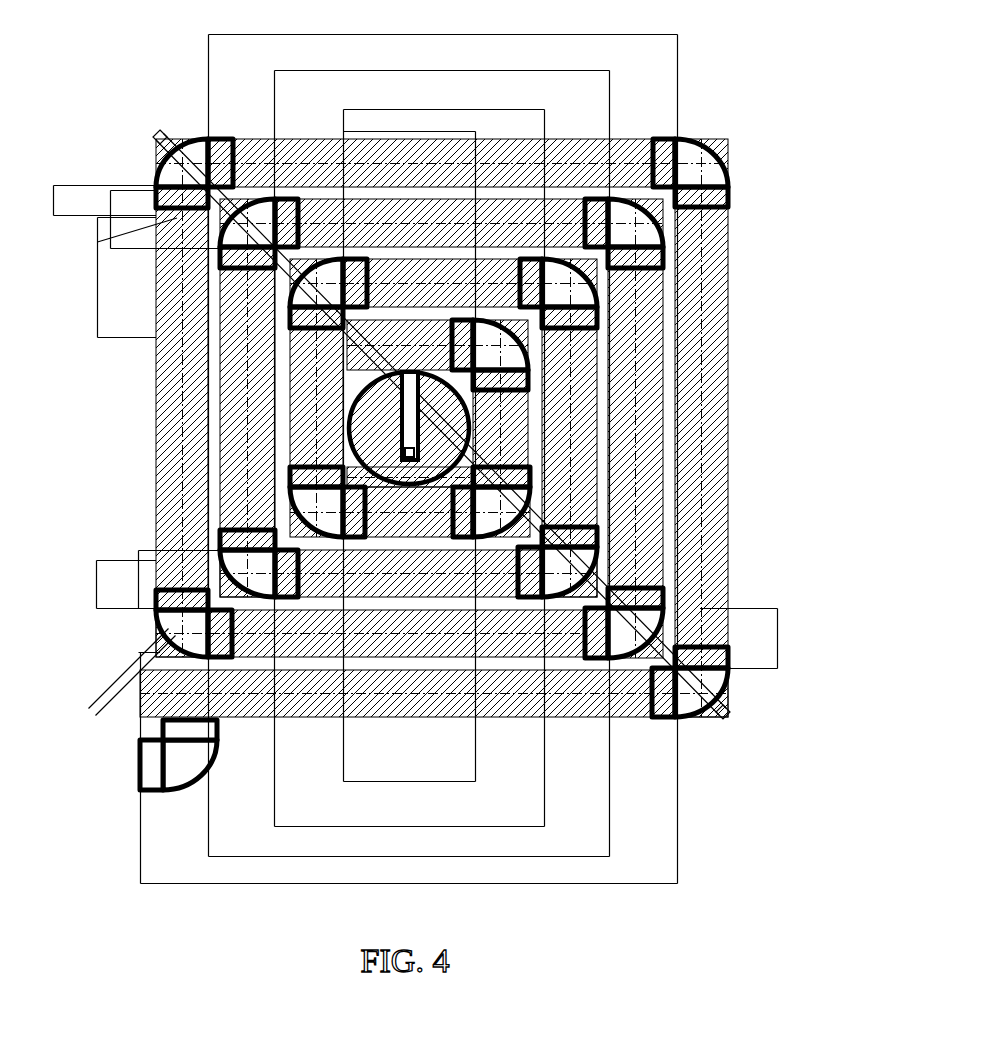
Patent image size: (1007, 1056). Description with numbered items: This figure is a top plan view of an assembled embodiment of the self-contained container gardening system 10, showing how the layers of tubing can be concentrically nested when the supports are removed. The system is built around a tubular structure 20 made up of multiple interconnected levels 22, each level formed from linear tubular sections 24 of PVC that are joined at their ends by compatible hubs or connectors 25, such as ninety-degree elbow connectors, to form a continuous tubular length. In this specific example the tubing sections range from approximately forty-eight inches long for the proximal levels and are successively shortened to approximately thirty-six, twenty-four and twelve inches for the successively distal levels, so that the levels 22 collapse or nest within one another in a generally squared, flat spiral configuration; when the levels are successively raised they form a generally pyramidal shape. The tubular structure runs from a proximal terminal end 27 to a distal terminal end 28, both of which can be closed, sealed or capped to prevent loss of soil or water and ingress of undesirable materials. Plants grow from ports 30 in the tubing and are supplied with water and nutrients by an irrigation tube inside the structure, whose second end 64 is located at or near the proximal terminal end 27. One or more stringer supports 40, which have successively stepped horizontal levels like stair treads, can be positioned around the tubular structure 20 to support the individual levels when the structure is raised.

The self-contained container gardening system 10 is at (413, 450).
The tubular structure 20 is at (422, 428).
The levels 22 is at (573, 457).
The tubular sections 24 is at (155, 492).
The connectors 25 is at (170, 158).
The proximal terminal end 27 is at (140, 705).
The distal terminal end 28 is at (343, 340).
The ports 30 is at (235, 390).
The stringer supports 40 is at (114, 692).
The second end of the irrigation tube 64 is at (133, 682).